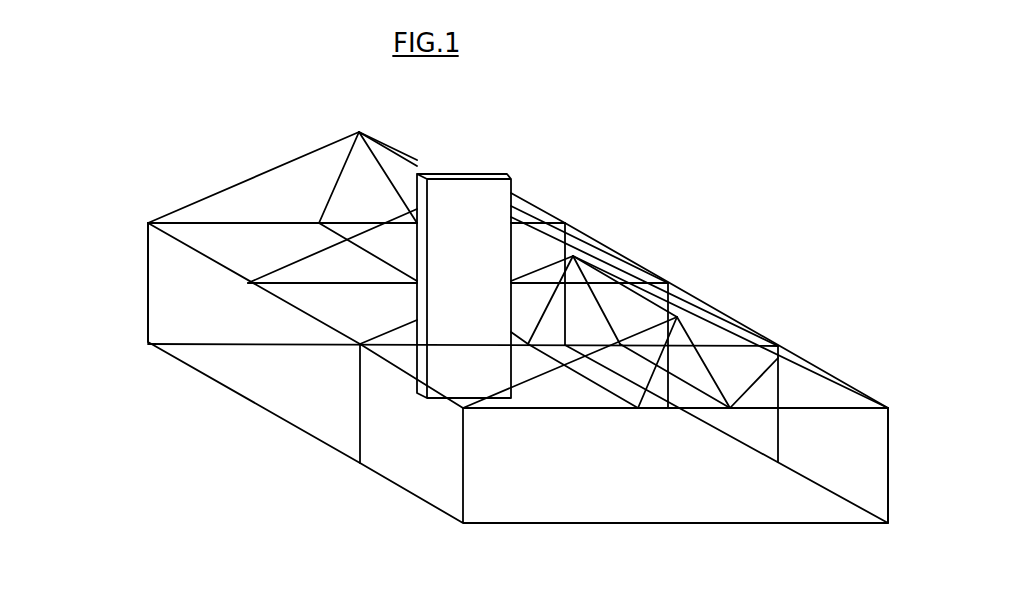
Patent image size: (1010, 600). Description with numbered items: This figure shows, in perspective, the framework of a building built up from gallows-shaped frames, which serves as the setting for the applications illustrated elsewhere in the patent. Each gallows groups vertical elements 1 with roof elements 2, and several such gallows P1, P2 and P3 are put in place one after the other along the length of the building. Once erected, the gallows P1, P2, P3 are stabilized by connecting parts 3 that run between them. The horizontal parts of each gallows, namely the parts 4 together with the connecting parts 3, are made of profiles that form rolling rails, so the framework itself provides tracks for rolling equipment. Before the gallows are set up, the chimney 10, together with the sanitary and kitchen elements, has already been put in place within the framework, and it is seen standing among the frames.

The vertical elements 1 is at (463, 460).
The roof elements 2 is at (754, 381).
The connecting parts 3 is at (285, 303).
The horizontal parts 4 is at (310, 282).
The chimney 10 is at (495, 208).
The gallows P1 is at (888, 432).
The gallows P2 is at (360, 407).
The gallows P3 is at (148, 290).